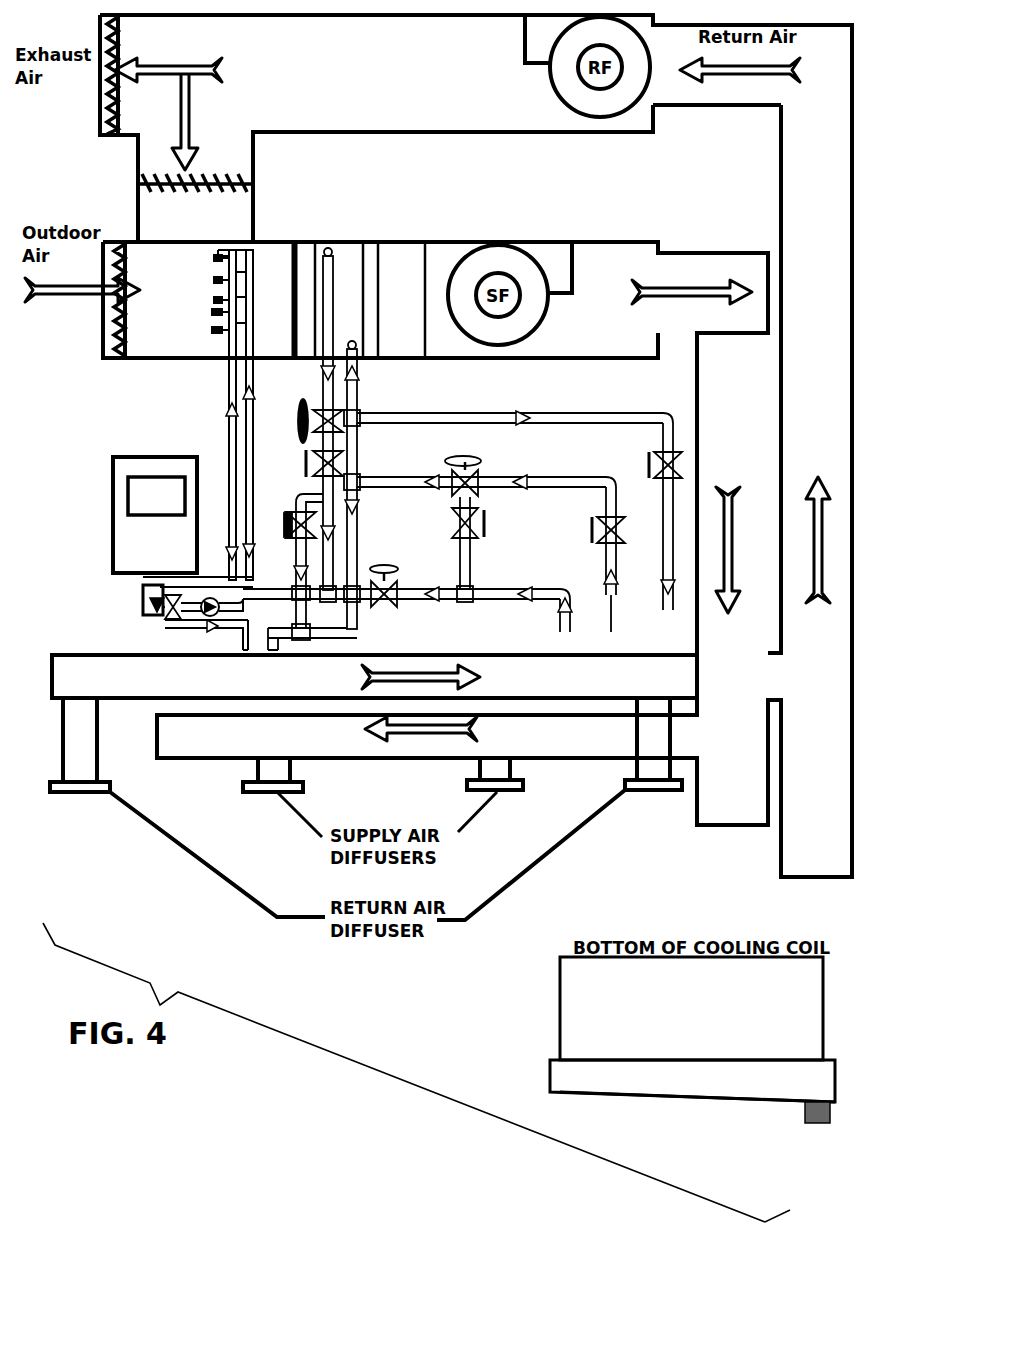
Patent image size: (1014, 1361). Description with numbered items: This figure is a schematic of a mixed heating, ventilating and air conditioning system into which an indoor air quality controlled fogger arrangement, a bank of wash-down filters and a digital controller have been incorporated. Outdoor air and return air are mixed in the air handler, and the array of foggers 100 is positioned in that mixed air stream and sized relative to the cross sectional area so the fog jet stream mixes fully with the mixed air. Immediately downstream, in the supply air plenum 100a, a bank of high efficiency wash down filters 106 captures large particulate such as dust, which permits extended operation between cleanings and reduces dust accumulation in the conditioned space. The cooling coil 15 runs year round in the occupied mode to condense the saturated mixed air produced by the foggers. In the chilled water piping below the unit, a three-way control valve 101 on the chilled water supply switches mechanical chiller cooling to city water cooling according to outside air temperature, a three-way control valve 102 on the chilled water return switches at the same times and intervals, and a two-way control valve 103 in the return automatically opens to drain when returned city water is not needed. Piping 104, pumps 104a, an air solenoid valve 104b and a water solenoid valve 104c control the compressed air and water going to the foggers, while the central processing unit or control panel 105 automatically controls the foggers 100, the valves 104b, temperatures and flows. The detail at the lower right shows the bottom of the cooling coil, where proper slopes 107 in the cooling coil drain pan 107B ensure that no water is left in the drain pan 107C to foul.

The cooling coil 15 is at (331, 230).
The fogger array 100 is at (208, 289).
The supply air plenum 100a is at (576, 247).
The three-way control valve 101 is at (490, 475).
The three-way control valve 102 is at (308, 408).
The two-way control valve 103 is at (293, 507).
The piping 104 is at (228, 634).
The pumps 104a is at (172, 615).
The air solenoid valve 104b is at (141, 591).
The water solenoid valve 104c is at (148, 608).
The central processing unit 105 is at (111, 505).
The bank of high efficiency wash down filters 106 is at (297, 292).
The slopes 107 is at (619, 1096).
The cooling coil drain pan 107B is at (718, 1090).
The drain pan 107C is at (840, 1110).